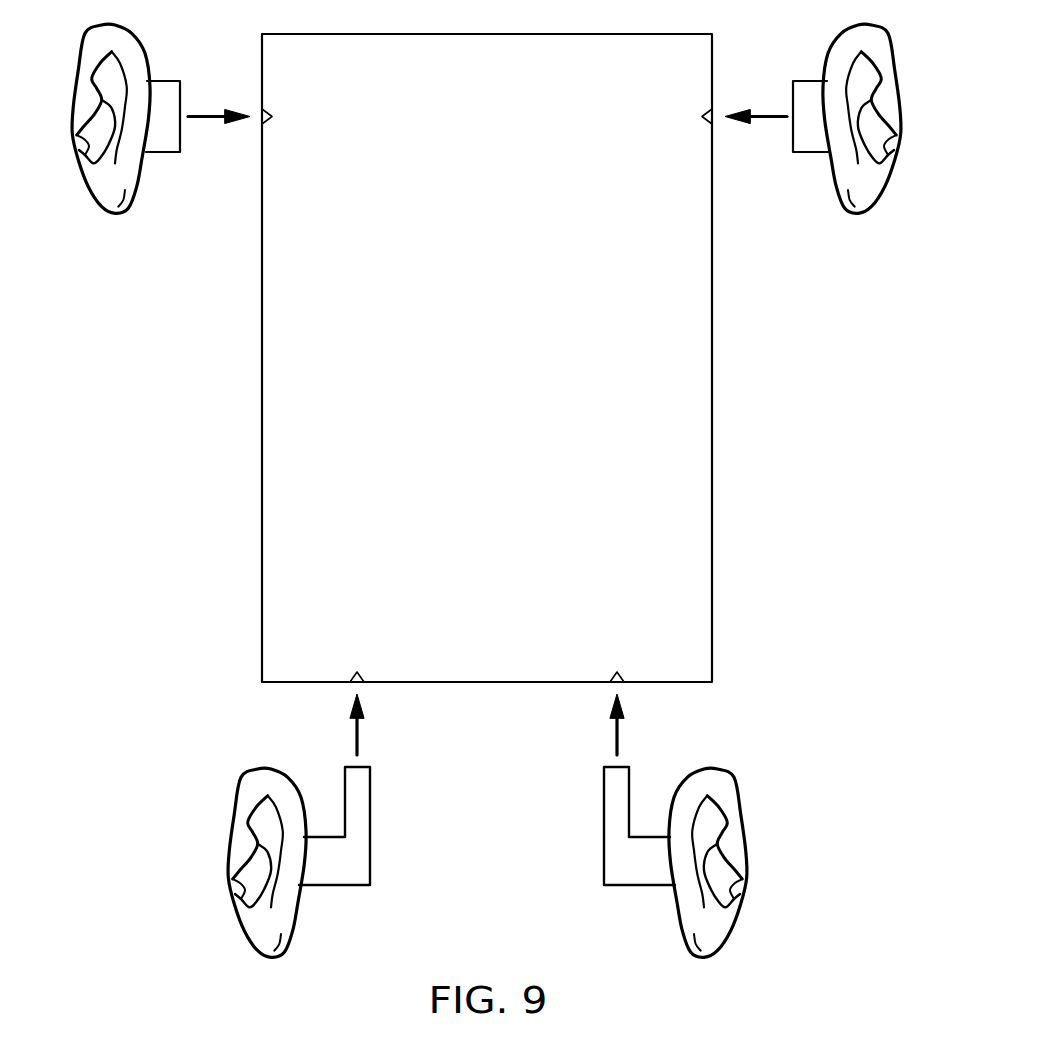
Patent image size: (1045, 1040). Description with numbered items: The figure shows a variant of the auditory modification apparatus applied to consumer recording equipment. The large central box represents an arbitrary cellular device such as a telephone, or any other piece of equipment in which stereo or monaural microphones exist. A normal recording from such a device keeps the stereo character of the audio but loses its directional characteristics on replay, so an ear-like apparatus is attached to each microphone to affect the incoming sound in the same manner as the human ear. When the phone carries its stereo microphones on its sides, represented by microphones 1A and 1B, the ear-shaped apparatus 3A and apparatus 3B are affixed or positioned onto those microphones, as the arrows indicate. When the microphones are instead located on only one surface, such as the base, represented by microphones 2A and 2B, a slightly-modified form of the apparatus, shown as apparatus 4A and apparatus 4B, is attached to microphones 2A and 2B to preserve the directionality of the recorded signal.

The stereo microphone 1A is at (287, 117).
The stereo microphone 1B is at (687, 117).
The stereo microphone 2A is at (357, 660).
The stereo microphone 2B is at (617, 660).
The auditory modification apparatus 3A is at (107, 118).
The auditory modification apparatus 3B is at (866, 118).
The slightly-modified auditory modification apparatus 4A is at (280, 862).
The slightly-modified auditory modification apparatus 4B is at (695, 862).